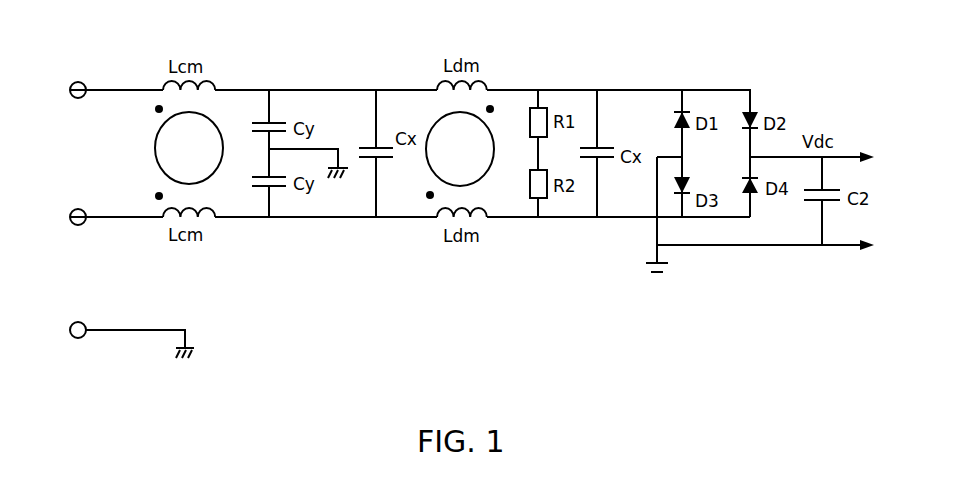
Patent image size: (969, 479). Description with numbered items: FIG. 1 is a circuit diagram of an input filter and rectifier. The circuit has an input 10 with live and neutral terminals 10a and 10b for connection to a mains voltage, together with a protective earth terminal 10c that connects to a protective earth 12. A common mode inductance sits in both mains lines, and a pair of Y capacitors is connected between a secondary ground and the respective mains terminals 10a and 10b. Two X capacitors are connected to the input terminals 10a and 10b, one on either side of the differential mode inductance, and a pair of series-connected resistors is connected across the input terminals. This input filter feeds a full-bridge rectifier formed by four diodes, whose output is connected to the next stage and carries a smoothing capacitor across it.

The input 10 is at (80, 137).
The live terminal 10a is at (75, 82).
The neutral terminal 10b is at (75, 226).
The protective earth terminal 10c is at (75, 338).
The protective earth 12 is at (181, 358).